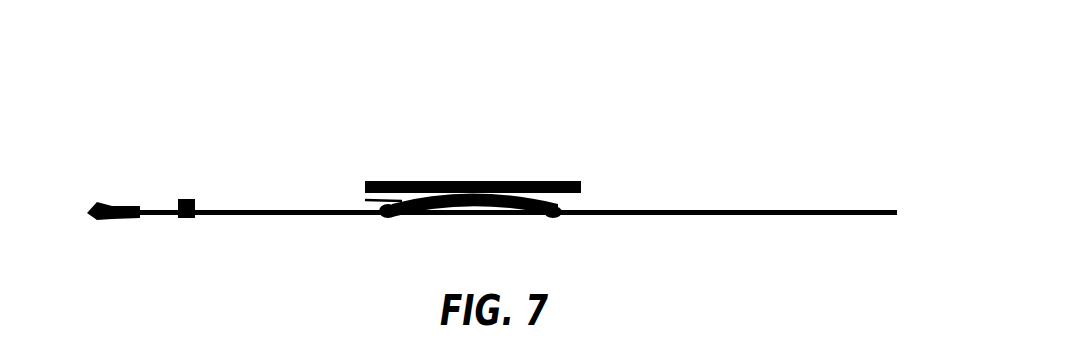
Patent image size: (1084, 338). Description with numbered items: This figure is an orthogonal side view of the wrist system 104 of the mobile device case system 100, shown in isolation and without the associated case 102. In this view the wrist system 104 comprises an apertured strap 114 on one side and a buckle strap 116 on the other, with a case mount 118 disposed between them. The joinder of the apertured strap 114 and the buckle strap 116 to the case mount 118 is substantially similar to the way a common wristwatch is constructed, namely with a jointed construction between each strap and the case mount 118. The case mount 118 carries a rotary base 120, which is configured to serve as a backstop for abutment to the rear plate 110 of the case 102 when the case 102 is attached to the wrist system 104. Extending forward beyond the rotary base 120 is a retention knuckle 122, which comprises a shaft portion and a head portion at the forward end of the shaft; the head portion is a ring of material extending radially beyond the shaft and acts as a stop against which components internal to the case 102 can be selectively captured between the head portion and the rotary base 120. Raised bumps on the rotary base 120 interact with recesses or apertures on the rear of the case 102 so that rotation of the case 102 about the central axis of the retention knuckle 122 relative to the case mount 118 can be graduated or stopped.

The mobile device case system 100 is at (607, 138).
The case 102 is at (383, 180).
The wrist system 104 is at (617, 208).
The rear plate 110 is at (562, 198).
The apertured strap 114 is at (750, 210).
The buckle strap 116 is at (247, 210).
The case mount 118 is at (545, 213).
The rotary base 120 is at (390, 200).
The retention knuckle 122 is at (473, 180).